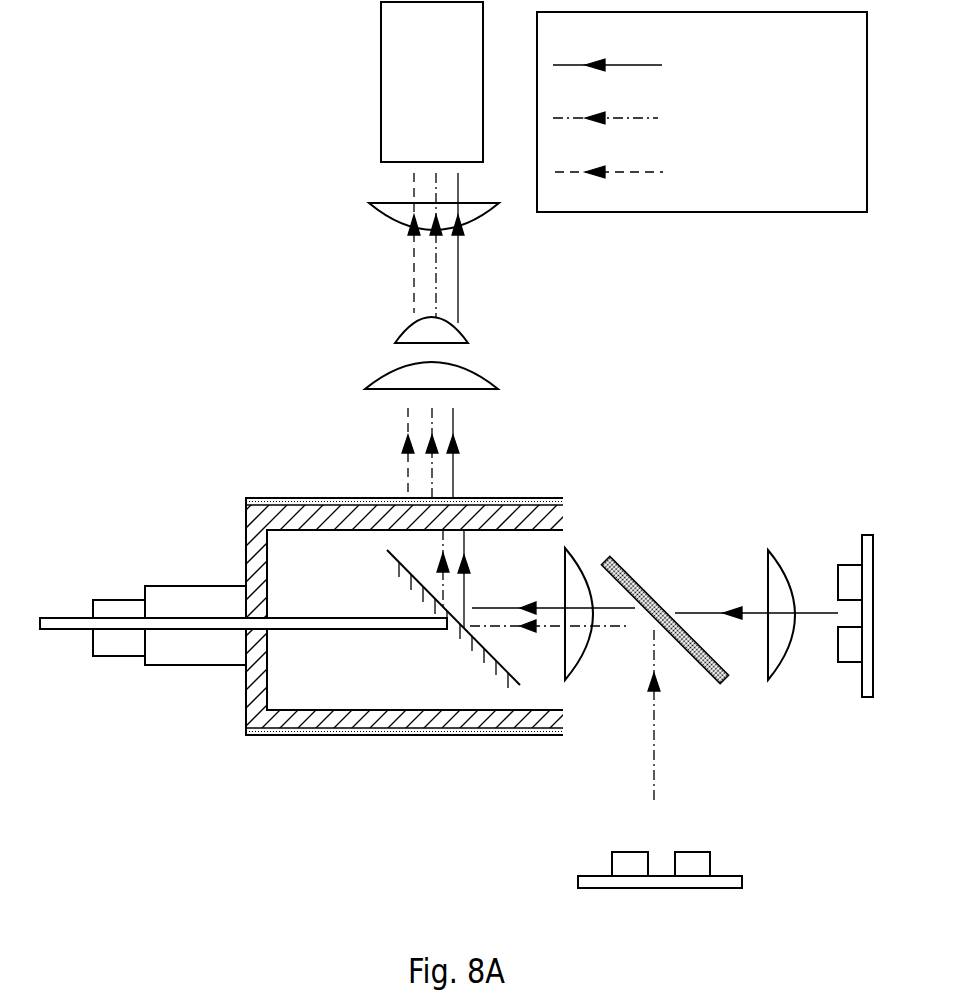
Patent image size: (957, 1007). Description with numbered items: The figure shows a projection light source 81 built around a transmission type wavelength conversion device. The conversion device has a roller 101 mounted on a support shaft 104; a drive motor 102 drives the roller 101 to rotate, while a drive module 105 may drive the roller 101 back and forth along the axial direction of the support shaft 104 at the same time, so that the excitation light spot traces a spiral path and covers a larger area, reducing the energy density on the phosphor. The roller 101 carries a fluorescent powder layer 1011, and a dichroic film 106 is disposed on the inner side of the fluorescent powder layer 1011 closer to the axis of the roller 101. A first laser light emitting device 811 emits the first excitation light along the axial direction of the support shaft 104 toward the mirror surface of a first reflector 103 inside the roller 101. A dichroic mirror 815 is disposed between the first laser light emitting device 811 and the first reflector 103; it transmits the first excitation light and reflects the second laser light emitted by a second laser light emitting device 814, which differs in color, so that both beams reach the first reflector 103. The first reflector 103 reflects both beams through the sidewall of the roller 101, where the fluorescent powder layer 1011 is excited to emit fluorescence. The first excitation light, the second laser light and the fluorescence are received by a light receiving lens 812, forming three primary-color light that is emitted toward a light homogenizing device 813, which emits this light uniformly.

The projection light source 81 is at (137, 60).
The roller 101 is at (257, 673).
The fluorescent powder layer 1011 is at (280, 500).
The drive motor 102 is at (202, 585).
The first reflector 103 is at (465, 647).
The support shaft 104 is at (293, 617).
The drive module 105 is at (123, 599).
The dichroic film 106 is at (378, 528).
The first laser light emitting device 811 is at (860, 533).
The light receiving lens 812 is at (380, 377).
The light homogenizing device 813 is at (381, 80).
The second laser light emitting device 814 is at (732, 875).
The dichroic mirror 815 is at (630, 575).